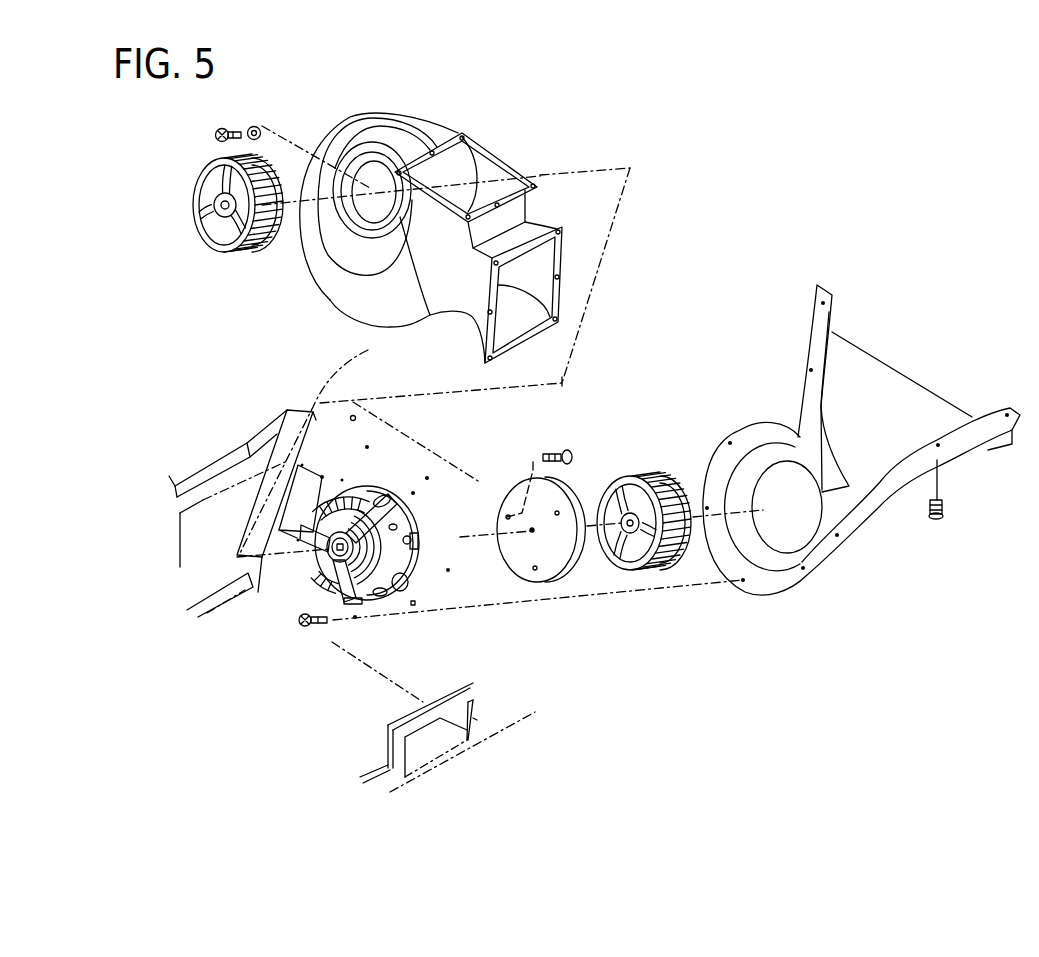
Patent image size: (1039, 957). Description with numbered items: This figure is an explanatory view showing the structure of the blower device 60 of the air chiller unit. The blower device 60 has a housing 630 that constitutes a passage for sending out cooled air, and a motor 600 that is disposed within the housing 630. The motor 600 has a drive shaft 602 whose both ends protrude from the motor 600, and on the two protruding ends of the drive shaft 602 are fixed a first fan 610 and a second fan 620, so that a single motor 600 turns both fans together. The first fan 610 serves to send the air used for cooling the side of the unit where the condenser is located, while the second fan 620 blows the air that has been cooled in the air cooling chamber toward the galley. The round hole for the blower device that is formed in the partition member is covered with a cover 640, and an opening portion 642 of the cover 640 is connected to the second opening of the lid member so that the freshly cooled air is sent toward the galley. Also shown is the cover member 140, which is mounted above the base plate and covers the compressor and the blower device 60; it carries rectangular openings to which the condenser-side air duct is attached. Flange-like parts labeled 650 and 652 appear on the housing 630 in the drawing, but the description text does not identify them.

The blower device 60 is at (588, 142).
The first fan 610 is at (213, 242).
The housing 630 is at (368, 297).
The upper flange 650 is at (485, 168).
The outlet flange 652 is at (523, 325).
The motor 600 is at (320, 553).
The drive shaft 602 is at (278, 610).
The second fan 620 is at (623, 481).
The cover 640 is at (863, 512).
The opening portion 642 is at (833, 317).
The cover member 140 is at (417, 660).